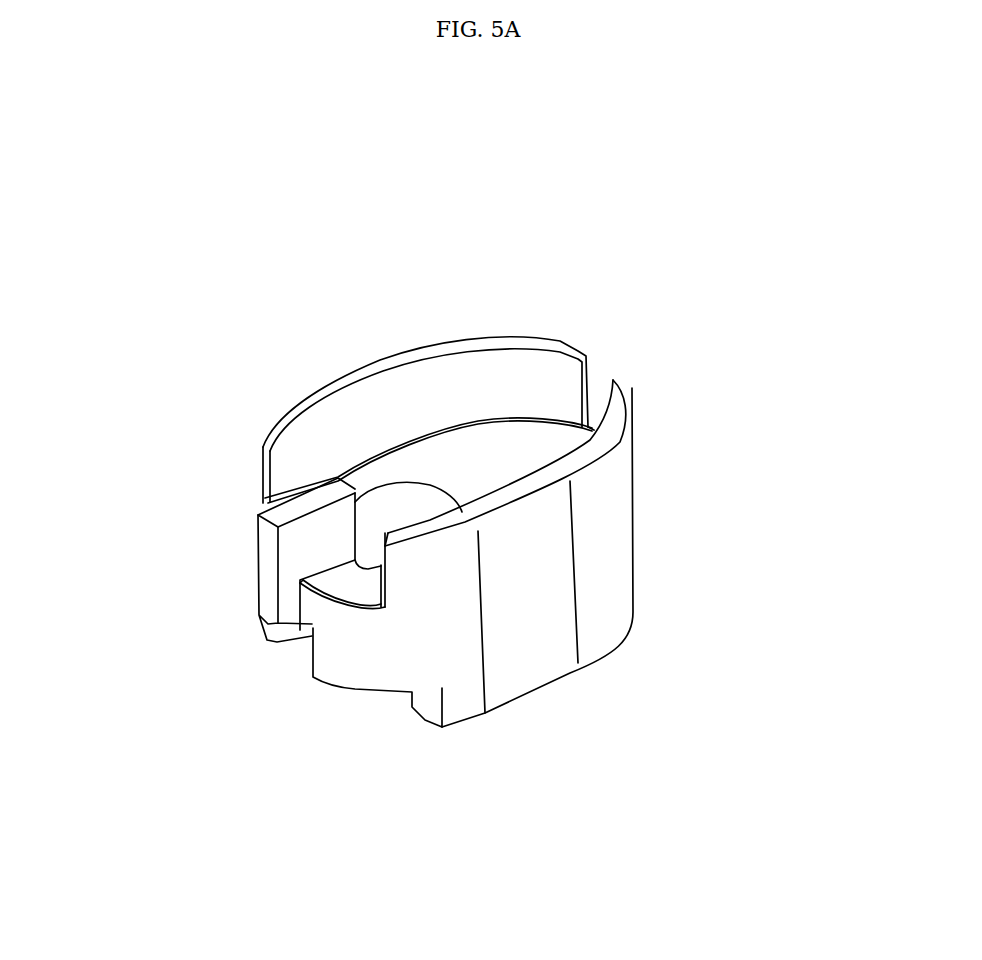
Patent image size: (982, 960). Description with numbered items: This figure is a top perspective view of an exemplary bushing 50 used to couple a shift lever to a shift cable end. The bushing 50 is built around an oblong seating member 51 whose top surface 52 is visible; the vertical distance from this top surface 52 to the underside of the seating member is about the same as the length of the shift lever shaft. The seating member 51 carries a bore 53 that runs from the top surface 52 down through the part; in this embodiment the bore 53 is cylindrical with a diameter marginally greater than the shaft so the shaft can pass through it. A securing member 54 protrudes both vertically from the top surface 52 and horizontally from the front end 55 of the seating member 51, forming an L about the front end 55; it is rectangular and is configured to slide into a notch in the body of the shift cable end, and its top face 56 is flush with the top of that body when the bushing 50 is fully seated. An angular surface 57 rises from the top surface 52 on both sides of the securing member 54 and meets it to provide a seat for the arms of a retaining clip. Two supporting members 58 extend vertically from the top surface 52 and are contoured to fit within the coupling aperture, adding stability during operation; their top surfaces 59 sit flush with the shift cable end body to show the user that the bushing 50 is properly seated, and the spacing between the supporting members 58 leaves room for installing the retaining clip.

The bushing 50 is at (703, 454).
The seating member 51 is at (345, 685).
The top surface 52 is at (532, 442).
The bore 53 is at (408, 500).
The securing member 54 is at (270, 548).
The front end 55 is at (337, 630).
The top face 56 is at (297, 510).
The angular surface 57 is at (322, 577).
The supporting members 58 is at (508, 487).
The top surfaces 59 is at (562, 477).